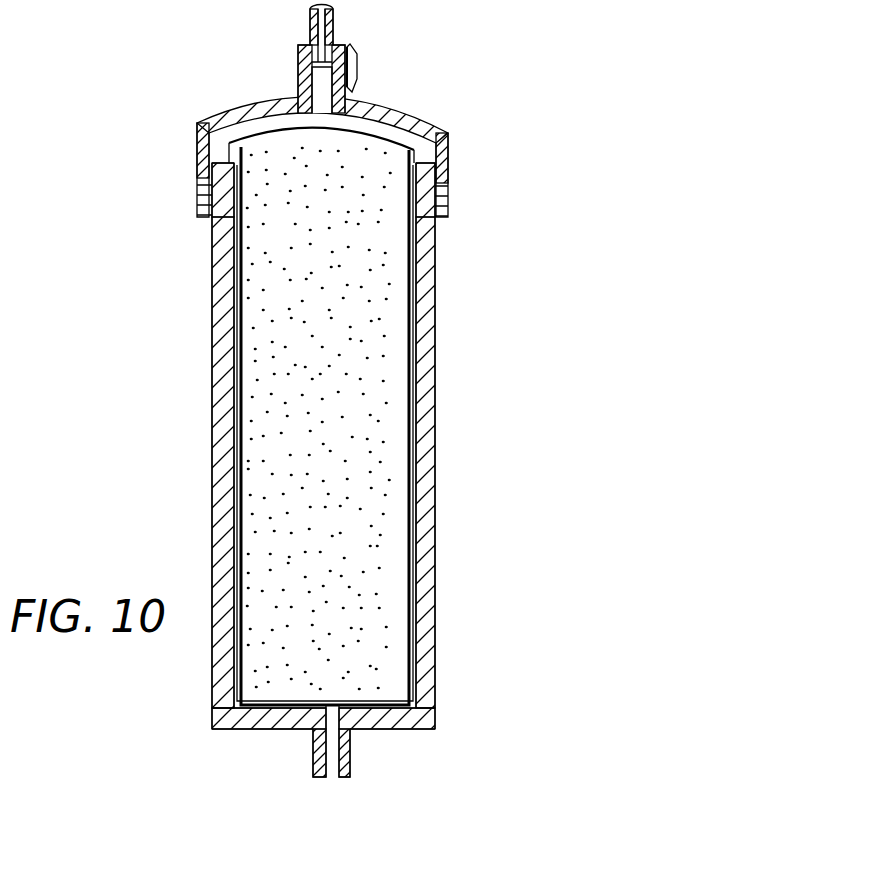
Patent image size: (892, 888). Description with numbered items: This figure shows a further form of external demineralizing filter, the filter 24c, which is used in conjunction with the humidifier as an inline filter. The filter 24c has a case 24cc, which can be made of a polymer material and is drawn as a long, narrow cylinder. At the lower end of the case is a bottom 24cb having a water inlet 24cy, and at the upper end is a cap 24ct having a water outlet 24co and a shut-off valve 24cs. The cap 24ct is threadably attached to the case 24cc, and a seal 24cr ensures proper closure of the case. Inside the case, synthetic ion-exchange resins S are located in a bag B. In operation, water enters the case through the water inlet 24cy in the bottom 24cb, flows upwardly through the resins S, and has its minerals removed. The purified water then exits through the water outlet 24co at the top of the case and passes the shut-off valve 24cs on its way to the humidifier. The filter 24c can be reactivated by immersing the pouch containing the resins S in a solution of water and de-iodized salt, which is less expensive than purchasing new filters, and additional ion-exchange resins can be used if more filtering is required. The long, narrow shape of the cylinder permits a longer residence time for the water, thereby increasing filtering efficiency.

The filter 24c is at (487, 546).
The water outlet 24co is at (334, 19).
The shut-off valve 24cs is at (362, 65).
The cap 24ct is at (227, 109).
The seal 24cr is at (212, 172).
The case 24cc is at (441, 407).
The bottom 24cb is at (411, 728).
The water inlet 24cy is at (355, 756).
The synthetic ion-exchange resins S is at (283, 363).
The bag B is at (233, 503).